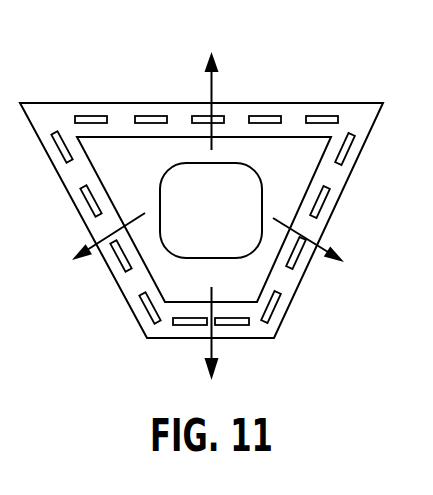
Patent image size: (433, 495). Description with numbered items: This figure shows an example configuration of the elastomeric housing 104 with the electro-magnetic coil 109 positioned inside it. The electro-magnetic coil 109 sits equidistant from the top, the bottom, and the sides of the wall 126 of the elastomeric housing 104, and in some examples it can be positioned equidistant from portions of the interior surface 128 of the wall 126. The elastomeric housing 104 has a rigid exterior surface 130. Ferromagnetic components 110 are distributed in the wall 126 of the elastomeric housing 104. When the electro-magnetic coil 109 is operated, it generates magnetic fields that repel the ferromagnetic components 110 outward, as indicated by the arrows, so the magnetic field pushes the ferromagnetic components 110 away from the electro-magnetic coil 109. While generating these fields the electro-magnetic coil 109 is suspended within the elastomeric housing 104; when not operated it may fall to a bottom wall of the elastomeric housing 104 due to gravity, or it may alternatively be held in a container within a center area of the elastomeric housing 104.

The elastomeric housing 104 is at (201, 198).
The electro-magnetic coil 109 is at (211, 210).
The ferromagnetic components 110 is at (140, 315).
The wall 126 is at (326, 97).
The interior surface 128 is at (307, 137).
The rigid exterior surface 130 is at (307, 103).